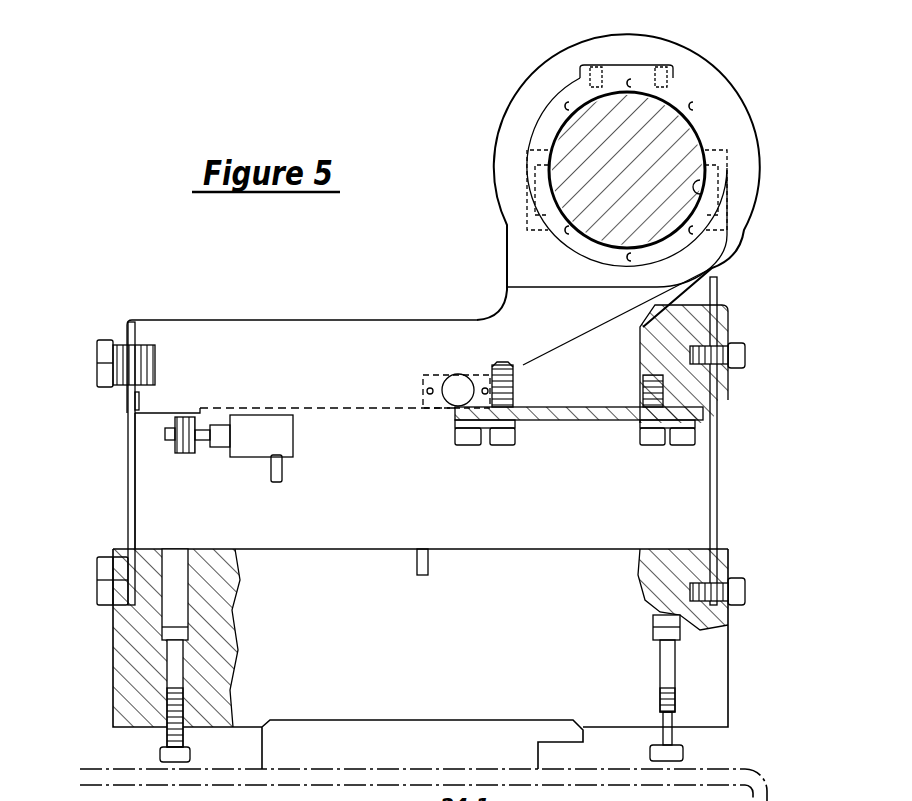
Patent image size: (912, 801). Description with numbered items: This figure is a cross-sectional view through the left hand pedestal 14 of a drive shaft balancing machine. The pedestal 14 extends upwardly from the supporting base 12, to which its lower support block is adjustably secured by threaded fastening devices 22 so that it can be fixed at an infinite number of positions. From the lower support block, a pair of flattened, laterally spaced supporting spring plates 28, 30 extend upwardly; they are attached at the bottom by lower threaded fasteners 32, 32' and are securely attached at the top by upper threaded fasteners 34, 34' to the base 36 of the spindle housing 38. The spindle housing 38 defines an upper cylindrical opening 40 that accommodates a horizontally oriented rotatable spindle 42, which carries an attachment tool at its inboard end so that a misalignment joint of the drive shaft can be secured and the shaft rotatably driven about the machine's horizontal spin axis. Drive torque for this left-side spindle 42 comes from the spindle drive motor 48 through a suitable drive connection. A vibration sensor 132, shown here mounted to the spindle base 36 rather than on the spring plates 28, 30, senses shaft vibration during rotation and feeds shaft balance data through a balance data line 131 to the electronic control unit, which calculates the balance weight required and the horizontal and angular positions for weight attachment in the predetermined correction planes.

The supporting base 12 is at (760, 770).
The left hand pedestal 14 is at (702, 88).
The threaded fastening devices 22 is at (178, 655).
The supporting spring plate 28 is at (128, 470).
The supporting spring plate 30 is at (717, 480).
The lower threaded fastener 32 is at (78, 581).
The lower threaded fastener 32' is at (740, 574).
The upper threaded fastener 34 is at (93, 364).
The upper threaded fastener 34' is at (713, 363).
The spindle housing base 36 is at (265, 330).
The spindle housing 38 is at (712, 130).
The upper cylindrical opening 40 is at (700, 188).
The spindle 42 is at (572, 178).
The spindle drive motor 48 is at (520, 86).
The balance data line 131 is at (270, 470).
The vibration sensor 132 is at (293, 432).